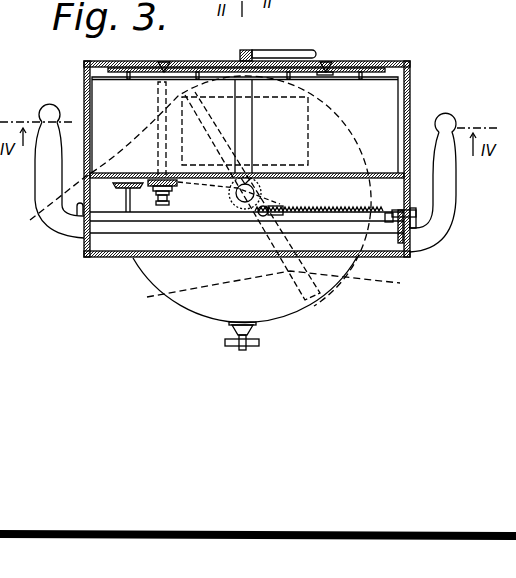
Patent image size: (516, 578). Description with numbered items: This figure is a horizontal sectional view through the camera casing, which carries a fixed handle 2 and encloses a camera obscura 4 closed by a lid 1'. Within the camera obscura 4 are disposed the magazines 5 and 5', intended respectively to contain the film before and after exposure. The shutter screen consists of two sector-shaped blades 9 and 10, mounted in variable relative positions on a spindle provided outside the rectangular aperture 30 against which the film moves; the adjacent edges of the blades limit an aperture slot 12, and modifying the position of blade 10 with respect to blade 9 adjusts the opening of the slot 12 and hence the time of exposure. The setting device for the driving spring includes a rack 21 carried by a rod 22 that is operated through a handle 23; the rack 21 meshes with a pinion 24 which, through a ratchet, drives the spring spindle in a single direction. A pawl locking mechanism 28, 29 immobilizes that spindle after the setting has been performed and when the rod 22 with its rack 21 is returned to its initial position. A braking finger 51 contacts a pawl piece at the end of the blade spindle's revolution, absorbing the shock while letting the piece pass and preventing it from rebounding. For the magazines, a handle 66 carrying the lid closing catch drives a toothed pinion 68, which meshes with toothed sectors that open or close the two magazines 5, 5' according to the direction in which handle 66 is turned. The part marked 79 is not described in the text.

The lid 1' is at (227, 51).
The fixed handle 2 is at (456, 183).
The camera obscura 4 is at (88, 88).
The magazine 5 is at (258, 96).
The magazine 5' is at (203, 46).
The blade 9 is at (93, 207).
The blade 10 is at (288, 282).
The slot 12 is at (208, 178).
The rack 21 is at (383, 213).
The rod 22 is at (147, 228).
The handle 23 is at (37, 176).
The pinion 24 is at (262, 178).
The pawl locking mechanism 28 is at (253, 187).
The pawl locking mechanism 29 is at (246, 183).
The rectangular aperture 30 is at (338, 72).
The braking finger 51 is at (252, 202).
The handle 66 is at (305, 52).
The toothed pinion 68 is at (253, 62).
The slide bar 79 is at (180, 67).